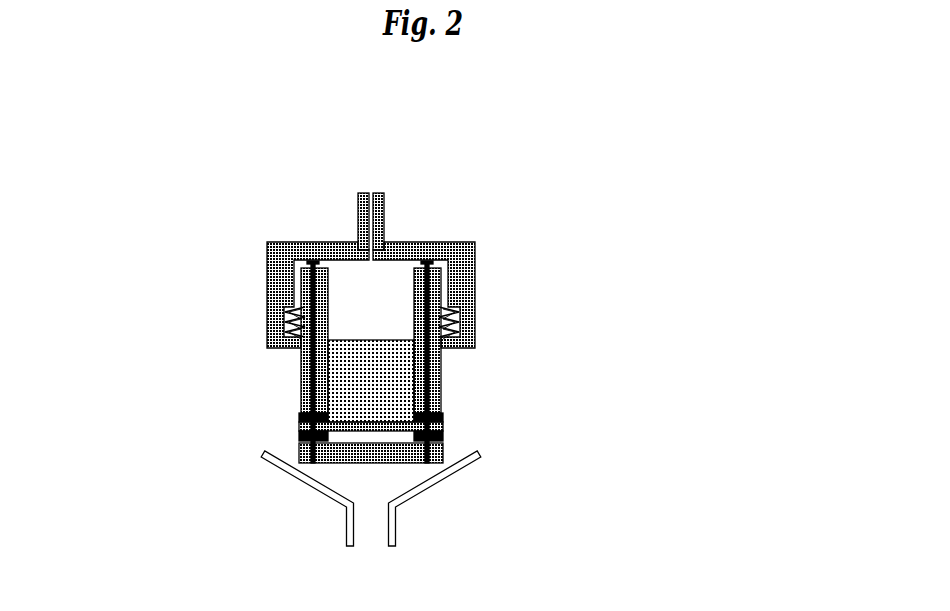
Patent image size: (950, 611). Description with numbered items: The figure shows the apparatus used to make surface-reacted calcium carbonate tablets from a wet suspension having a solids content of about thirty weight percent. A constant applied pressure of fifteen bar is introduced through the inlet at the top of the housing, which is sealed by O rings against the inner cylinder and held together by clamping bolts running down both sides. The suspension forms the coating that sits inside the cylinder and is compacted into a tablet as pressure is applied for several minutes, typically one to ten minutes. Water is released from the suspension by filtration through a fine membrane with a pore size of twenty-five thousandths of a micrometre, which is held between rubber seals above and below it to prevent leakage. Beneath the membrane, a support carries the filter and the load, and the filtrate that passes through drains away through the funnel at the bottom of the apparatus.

The element applied pressure is at (369, 174).
The element O rings is at (456, 264).
The element clamping bolts is at (291, 289).
The element coating is at (405, 396).
The element rubber seals is at (286, 419).
The filter membrane is at (456, 433).
The element support is at (286, 461).
The element funnel is at (424, 505).